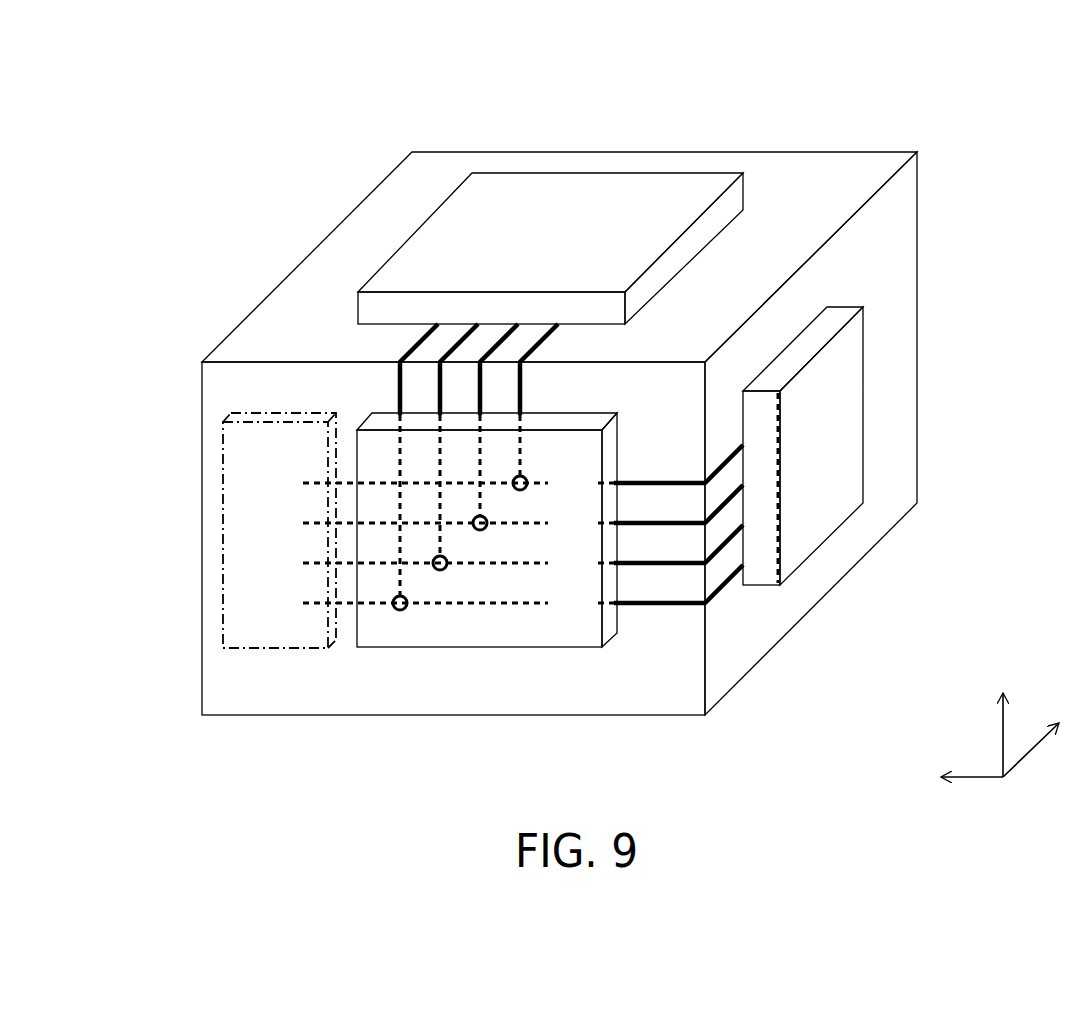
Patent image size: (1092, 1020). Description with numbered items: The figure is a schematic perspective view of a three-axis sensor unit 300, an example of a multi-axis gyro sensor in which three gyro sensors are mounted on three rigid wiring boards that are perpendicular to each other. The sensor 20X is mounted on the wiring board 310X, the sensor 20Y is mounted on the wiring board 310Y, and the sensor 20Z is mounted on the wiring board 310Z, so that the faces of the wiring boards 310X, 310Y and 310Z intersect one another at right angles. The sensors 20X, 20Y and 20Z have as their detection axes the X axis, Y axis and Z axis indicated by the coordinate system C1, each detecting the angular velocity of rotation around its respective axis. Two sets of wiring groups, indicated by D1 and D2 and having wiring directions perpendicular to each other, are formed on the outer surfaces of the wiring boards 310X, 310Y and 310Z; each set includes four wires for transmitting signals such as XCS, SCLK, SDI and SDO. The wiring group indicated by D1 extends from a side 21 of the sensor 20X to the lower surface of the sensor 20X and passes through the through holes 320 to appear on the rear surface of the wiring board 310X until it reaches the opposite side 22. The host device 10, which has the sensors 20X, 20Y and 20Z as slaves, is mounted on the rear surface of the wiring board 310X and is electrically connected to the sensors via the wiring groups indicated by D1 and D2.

The three-axis sensor unit 300 is at (569, 406).
The wiring board 310X is at (615, 697).
The wiring board 310Y is at (745, 652).
The wiring board 310Z is at (298, 285).
The sensor 20X is at (466, 580).
The sensor 20Y is at (843, 405).
The sensor 20Z is at (672, 173).
The host device 10 is at (232, 508).
The side of the sensor 21 is at (636, 652).
The opposite side 22 is at (319, 706).
The through holes 320 is at (524, 477).
The wiring group D1 is at (660, 455).
The wiring group D2 is at (370, 344).
The X axis, Y axis, and Z axis C1 is at (1019, 786).